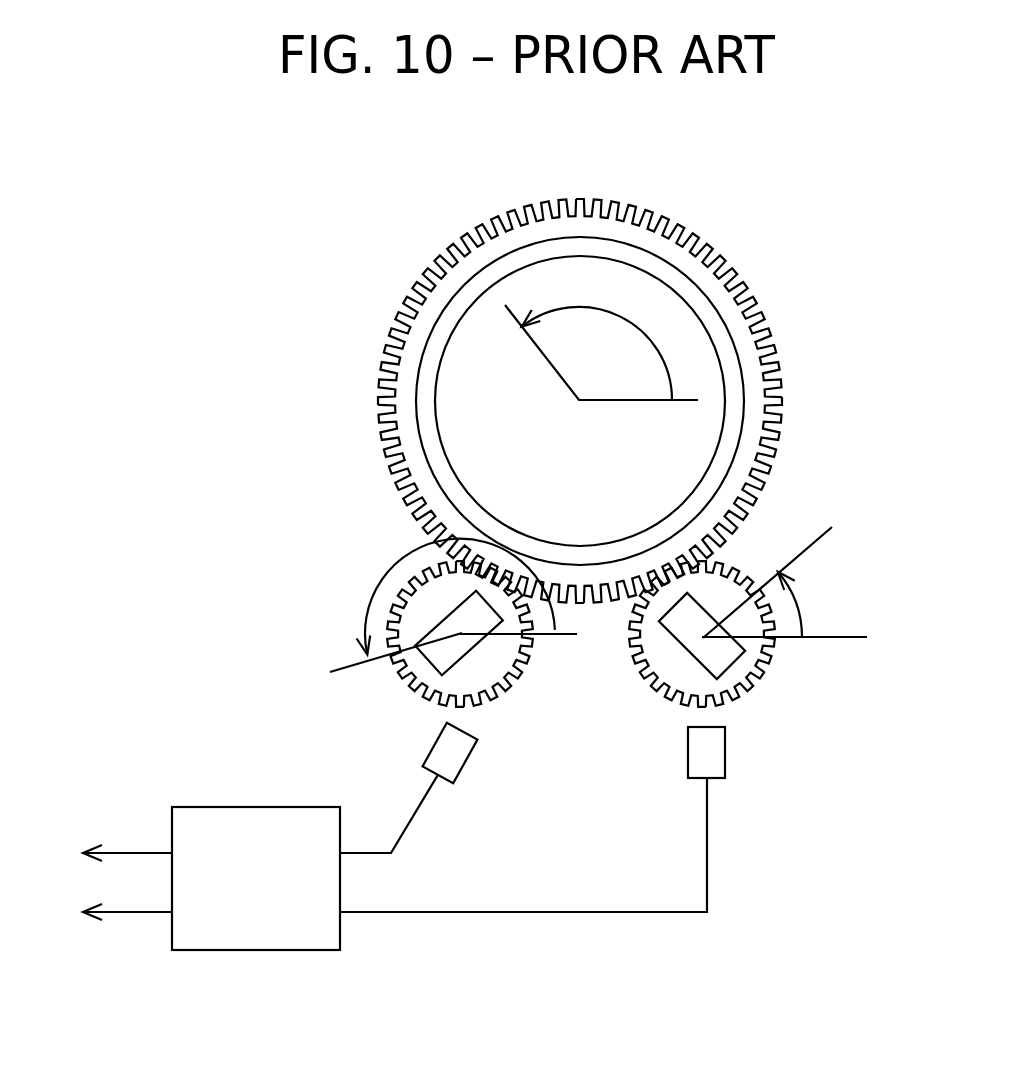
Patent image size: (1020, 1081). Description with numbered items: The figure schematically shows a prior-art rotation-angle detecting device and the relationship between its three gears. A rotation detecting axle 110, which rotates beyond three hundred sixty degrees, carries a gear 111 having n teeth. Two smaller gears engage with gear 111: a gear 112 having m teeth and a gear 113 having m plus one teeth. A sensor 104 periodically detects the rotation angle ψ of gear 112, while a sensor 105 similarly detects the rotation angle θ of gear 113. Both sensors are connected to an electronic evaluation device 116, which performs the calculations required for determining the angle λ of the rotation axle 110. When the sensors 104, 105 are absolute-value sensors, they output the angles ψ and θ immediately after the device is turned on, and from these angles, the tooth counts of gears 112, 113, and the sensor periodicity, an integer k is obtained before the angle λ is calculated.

The sensor 104 is at (467, 767).
The sensor 105 is at (725, 762).
The rotation detecting axle 110 is at (732, 388).
The gear 111 is at (710, 273).
The gear 112 is at (480, 677).
The gear 113 is at (675, 682).
The electronic evaluation device 116 is at (250, 818).